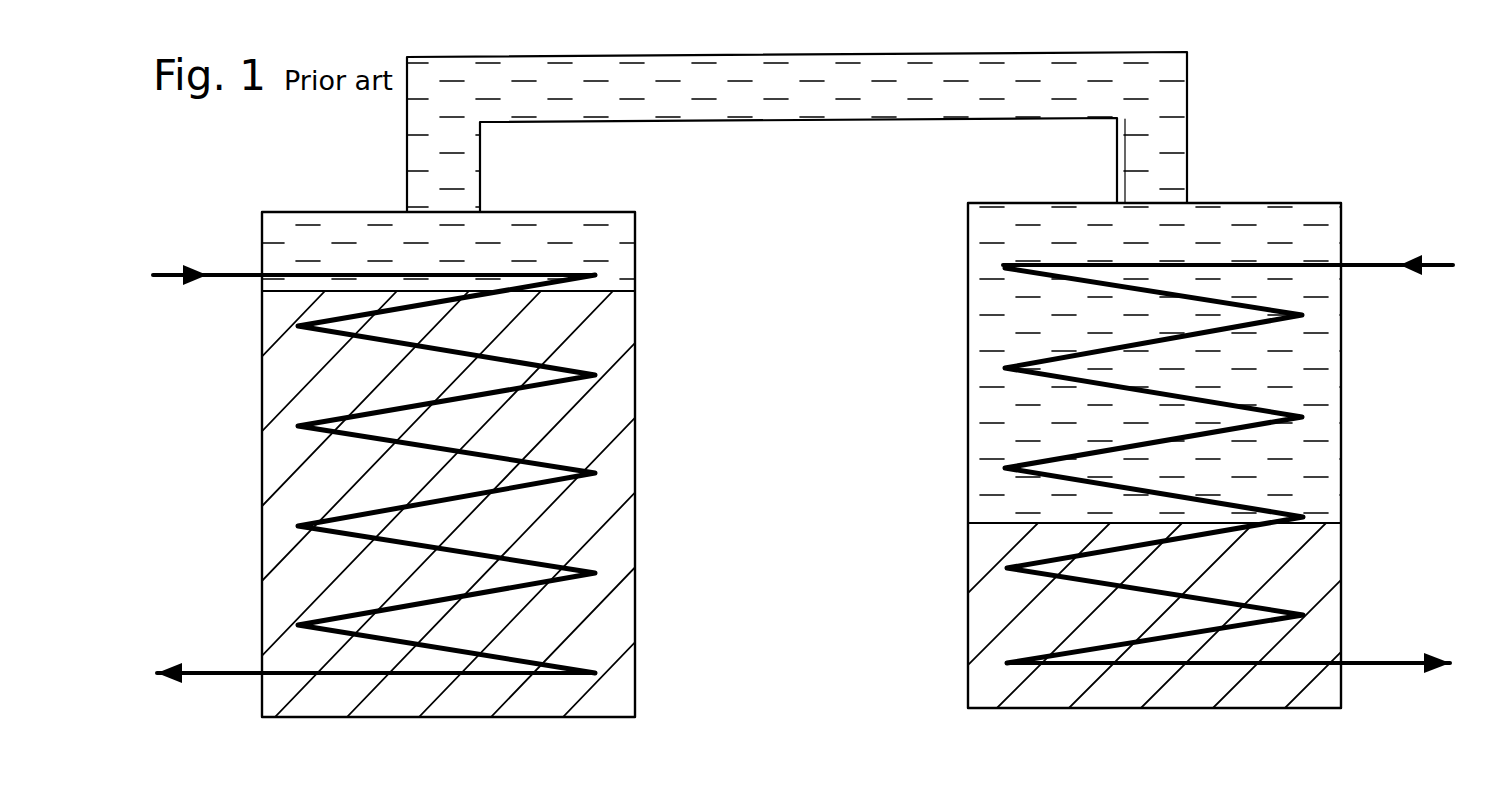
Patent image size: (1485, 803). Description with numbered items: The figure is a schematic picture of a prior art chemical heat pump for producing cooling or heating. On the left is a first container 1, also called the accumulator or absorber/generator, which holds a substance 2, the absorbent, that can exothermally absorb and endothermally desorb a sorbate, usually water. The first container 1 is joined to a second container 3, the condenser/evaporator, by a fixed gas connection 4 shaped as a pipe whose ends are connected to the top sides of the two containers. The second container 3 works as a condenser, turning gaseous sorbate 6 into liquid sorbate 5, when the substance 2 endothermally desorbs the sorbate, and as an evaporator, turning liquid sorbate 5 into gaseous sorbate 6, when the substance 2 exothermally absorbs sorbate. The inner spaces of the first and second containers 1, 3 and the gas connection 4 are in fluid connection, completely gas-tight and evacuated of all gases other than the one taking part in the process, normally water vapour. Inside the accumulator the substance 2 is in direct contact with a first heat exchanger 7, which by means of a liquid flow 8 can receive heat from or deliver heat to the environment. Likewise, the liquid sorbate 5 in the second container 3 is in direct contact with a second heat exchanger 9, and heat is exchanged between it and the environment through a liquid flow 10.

The first container 1 is at (262, 500).
The substance 2 is at (568, 535).
The second container 3 is at (1341, 447).
The fixed gas connection 4 is at (777, 56).
The liquid sorbate 5 is at (997, 617).
The gaseous sorbate 6 is at (987, 310).
The first heat exchanger 7 is at (572, 476).
The liquid flow 8 is at (213, 283).
The second heat exchanger 9 is at (1027, 458).
The liquid flow 10 is at (1368, 270).